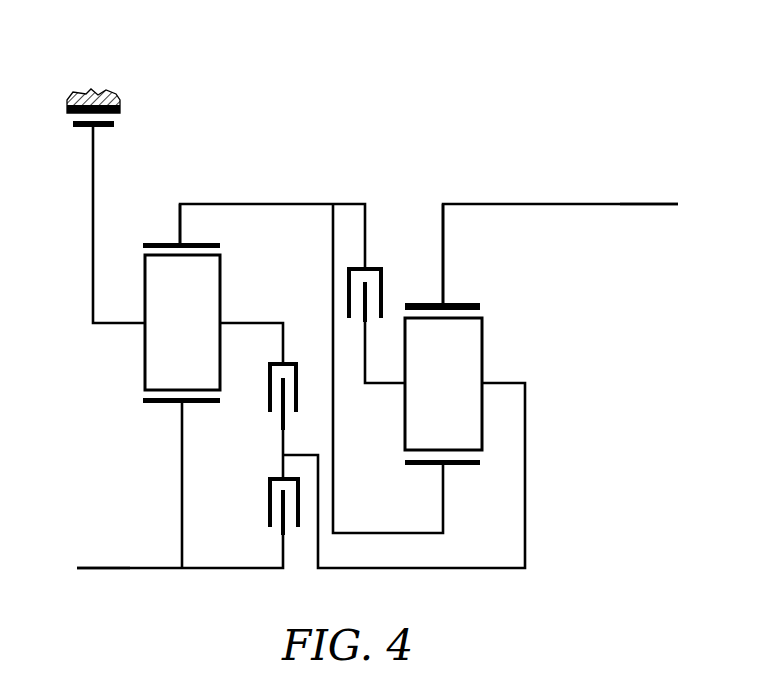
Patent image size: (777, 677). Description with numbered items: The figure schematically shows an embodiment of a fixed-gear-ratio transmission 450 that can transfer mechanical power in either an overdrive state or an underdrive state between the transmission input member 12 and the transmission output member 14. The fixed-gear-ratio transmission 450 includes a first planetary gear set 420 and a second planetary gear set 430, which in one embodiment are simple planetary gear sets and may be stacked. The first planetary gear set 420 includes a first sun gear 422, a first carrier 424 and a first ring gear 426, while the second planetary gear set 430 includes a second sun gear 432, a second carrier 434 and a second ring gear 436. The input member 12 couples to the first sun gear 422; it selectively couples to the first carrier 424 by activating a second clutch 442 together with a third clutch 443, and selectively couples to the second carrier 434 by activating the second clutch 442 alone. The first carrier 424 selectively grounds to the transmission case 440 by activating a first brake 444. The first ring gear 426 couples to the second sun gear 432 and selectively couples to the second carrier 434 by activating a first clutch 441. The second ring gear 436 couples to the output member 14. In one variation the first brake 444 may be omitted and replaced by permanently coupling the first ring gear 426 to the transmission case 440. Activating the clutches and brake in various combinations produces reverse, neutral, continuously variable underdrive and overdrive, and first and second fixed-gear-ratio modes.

The transmission input member 12 is at (87, 568).
The transmission output member 14 is at (666, 206).
The first planetary gear set 420 is at (199, 240).
The first sun gear 422 is at (197, 406).
The first carrier 424 is at (182, 322).
The first ring gear 426 is at (158, 242).
The second planetary gear set 430 is at (462, 296).
The second sun gear 432 is at (458, 467).
The second carrier 434 is at (443, 384).
The second ring gear 436 is at (427, 302).
The transmission case 440 is at (95, 89).
The first clutch C1 441 is at (346, 297).
The second clutch C2 442 is at (267, 507).
The third clutch C3 443 is at (299, 393).
The first brake B1 444 is at (104, 118).
The fixed-gear-ratio transmission 450 is at (586, 110).